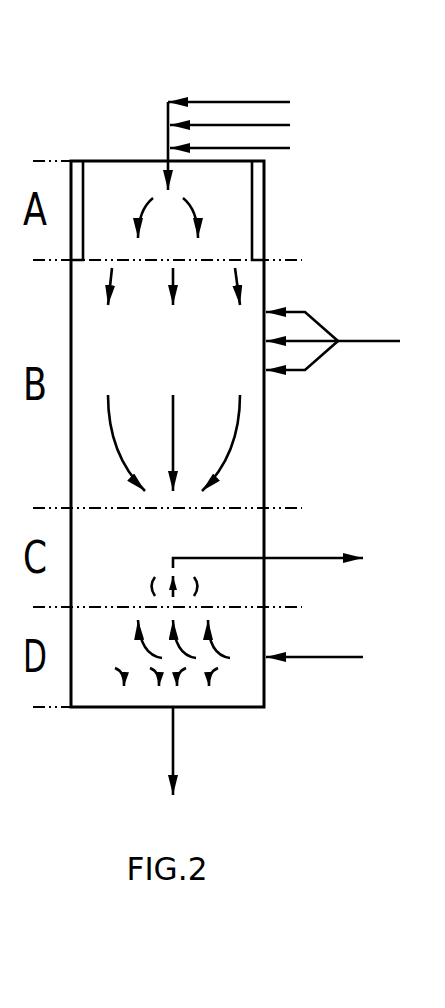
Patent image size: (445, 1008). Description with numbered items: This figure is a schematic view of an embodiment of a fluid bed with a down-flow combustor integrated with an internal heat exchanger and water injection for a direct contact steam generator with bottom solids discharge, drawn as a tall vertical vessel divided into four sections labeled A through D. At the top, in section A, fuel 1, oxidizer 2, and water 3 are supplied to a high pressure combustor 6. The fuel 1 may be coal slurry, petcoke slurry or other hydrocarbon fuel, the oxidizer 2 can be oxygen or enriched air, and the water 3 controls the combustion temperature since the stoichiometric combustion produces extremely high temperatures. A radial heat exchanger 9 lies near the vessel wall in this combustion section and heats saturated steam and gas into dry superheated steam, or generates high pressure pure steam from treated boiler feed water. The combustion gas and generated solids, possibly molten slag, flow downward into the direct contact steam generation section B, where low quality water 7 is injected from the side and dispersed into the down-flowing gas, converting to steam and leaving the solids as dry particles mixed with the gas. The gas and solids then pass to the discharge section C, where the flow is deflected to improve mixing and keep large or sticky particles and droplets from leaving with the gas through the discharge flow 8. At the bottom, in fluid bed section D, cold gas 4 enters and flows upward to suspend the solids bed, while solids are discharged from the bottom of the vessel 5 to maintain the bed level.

The fuel 1 is at (229, 91).
The oxidizer 2 is at (230, 114).
The water 3 is at (230, 138).
The cold gas 4 is at (320, 657).
The bottom of the vessel 5 is at (173, 738).
The high pressure combustor 6 is at (166, 170).
The low quality water 7 is at (355, 341).
The discharge flow 8 is at (320, 558).
The radial heat exchanger 9 is at (260, 230).